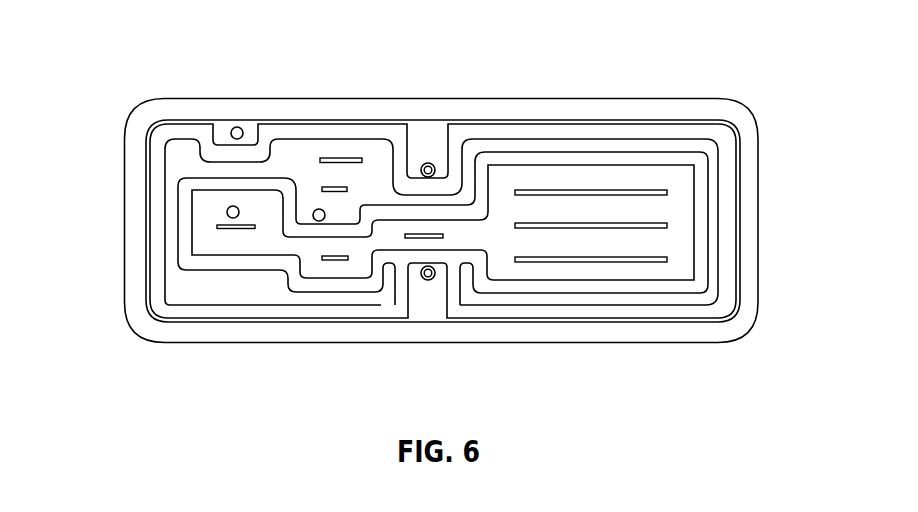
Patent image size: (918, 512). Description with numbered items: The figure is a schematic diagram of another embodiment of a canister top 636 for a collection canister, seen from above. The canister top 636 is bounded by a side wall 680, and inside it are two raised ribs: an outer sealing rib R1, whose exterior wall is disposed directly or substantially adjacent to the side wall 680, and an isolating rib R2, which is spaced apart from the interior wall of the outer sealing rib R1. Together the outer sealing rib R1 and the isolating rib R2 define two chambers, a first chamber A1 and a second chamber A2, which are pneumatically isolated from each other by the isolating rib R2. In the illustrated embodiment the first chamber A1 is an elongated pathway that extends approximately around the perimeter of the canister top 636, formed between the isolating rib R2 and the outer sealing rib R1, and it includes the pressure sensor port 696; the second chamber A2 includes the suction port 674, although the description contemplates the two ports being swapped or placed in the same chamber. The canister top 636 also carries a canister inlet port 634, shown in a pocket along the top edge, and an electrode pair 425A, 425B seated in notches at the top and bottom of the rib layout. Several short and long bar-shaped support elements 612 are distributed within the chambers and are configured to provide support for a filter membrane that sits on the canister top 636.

The canister top 636 is at (615, 49).
The side wall 680 is at (748, 226).
The outer sealing rib R1 is at (705, 125).
The isolating rib R2 is at (678, 294).
The first chamber A1 is at (374, 156).
The second chamber A2 is at (268, 237).
The canister inlet port 634 is at (232, 120).
The pressure sensor port 696 is at (315, 201).
The suction port 674 is at (221, 211).
The electrode pair 425A is at (431, 160).
The electrode pair 425B is at (431, 288).
The support elements 612 is at (335, 186).